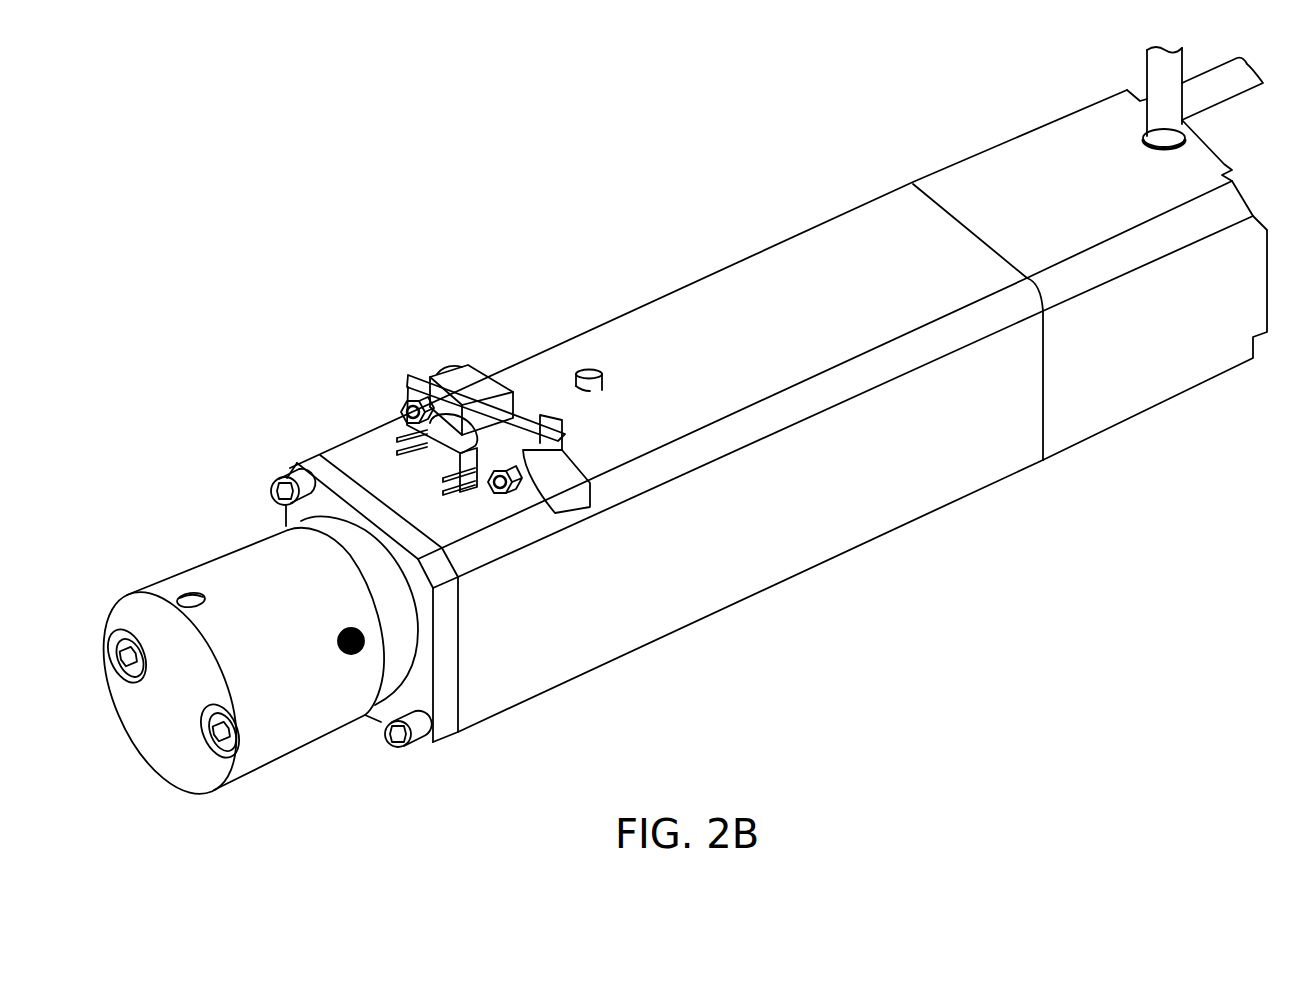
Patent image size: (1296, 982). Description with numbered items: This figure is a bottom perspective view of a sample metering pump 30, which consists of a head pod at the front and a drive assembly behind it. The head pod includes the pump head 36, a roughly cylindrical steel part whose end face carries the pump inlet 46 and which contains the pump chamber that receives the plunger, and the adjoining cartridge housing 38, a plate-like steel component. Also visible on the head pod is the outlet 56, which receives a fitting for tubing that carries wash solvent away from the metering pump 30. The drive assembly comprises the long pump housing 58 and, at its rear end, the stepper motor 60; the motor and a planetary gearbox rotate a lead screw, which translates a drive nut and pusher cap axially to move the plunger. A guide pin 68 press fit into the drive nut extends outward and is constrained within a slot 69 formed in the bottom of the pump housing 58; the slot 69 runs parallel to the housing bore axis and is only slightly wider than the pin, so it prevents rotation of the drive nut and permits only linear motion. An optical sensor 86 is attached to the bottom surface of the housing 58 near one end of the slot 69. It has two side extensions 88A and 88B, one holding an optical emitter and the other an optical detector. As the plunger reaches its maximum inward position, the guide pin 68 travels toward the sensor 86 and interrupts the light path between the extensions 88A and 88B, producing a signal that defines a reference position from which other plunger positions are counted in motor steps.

The sample metering pump 30 is at (298, 293).
The pump head 36 is at (253, 760).
The cartridge housing 38 is at (447, 740).
The pump inlet 46 is at (184, 597).
The outlet 56 is at (342, 635).
The pump housing 58 is at (950, 492).
The stepper motor 60 is at (1117, 407).
The guide pin 68 is at (600, 387).
The slot 69 is at (574, 403).
The optical sensor 86 is at (436, 404).
The side extension 88A is at (497, 383).
The side extension 88B is at (543, 425).